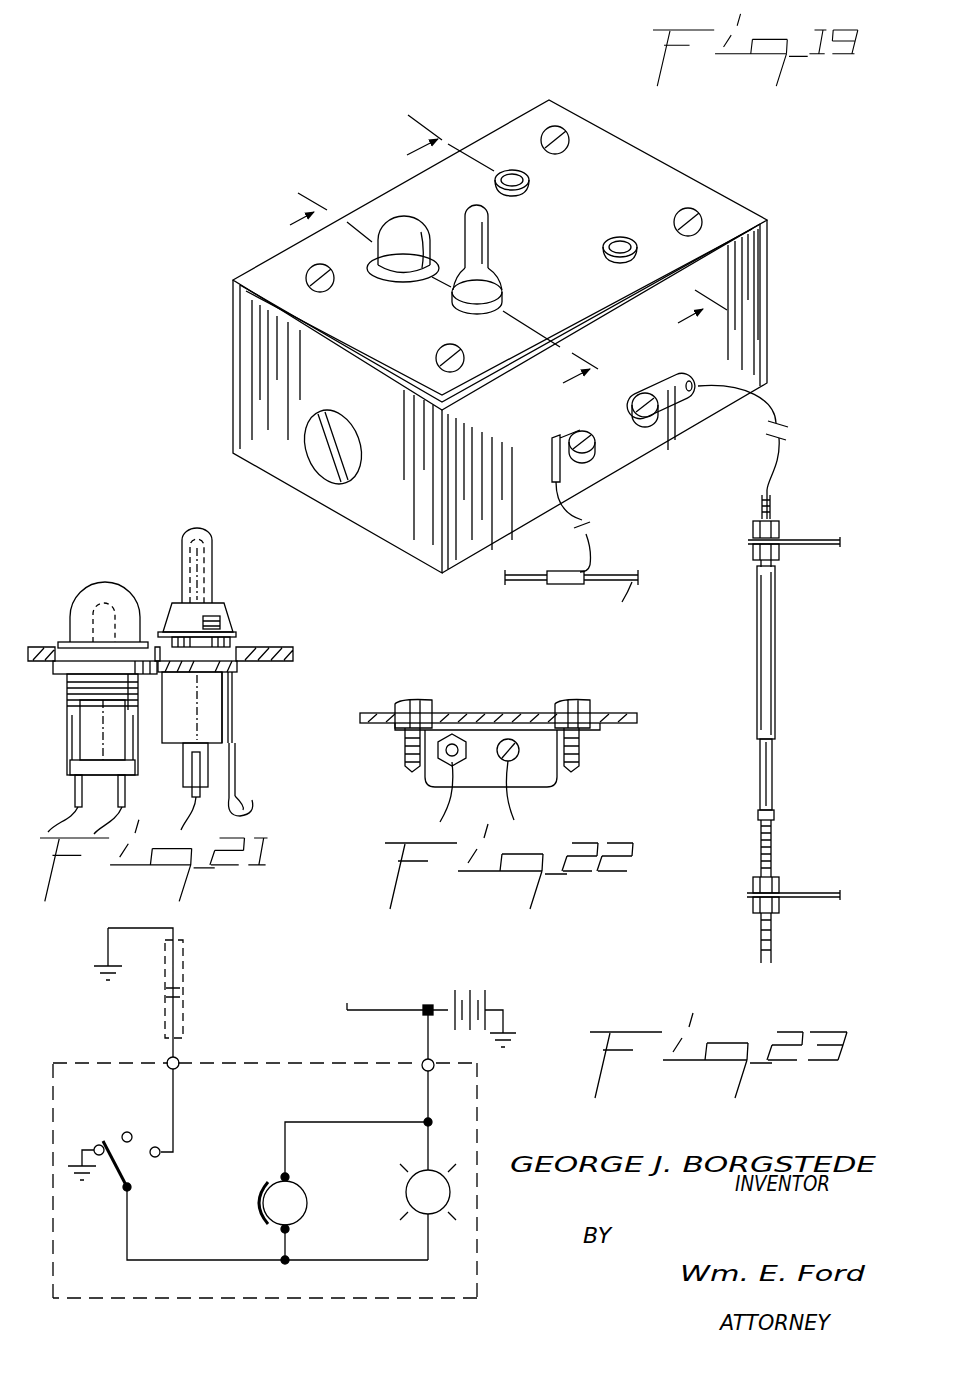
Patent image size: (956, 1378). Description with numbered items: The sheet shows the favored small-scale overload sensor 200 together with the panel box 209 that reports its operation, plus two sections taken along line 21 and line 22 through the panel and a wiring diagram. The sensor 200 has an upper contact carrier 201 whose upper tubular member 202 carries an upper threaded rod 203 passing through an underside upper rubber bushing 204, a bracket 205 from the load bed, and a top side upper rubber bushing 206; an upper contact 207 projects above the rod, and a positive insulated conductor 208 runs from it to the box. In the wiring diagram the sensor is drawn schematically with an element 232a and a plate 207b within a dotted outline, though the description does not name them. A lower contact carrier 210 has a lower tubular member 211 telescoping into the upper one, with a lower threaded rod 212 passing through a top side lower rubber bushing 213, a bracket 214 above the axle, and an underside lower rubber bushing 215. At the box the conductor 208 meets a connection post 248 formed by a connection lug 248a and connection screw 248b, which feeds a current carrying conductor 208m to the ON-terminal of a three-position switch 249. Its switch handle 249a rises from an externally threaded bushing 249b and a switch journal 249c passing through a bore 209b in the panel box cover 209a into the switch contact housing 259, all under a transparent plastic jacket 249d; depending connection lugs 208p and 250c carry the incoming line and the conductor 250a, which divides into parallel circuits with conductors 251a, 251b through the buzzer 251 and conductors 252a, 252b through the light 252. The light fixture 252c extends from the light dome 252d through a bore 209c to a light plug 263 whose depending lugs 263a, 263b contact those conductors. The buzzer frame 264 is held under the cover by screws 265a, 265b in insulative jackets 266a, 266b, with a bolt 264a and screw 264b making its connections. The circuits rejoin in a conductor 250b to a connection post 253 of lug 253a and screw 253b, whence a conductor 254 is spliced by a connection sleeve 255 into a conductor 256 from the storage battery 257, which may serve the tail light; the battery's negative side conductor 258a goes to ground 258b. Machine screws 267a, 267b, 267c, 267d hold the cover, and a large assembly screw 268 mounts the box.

In FIG. 19, the panel box 209 is at (776, 319).
In FIG. 19, the panel box cover 209a is at (651, 156).
In FIG. 22, the panel box cover 209a is at (511, 712).
In FIG. 21, the bore 209b is at (256, 665).
In FIG. 21, the bore 209c is at (40, 663).
In FIG. 19, the large assembly screw 268 is at (326, 410).
In FIG. 19, the machine screw 267a is at (560, 126).
In FIG. 19, the machine screw 267b is at (700, 216).
In FIG. 19, the machine screw 267c is at (306, 276).
In FIG. 19, the machine screw 267d is at (447, 344).
In FIG. 19, the screw 265a is at (513, 170).
In FIG. 22, the screw 265a is at (421, 700).
In FIG. 19, the screw 265b is at (606, 244).
In FIG. 22, the screw 265b is at (572, 704).
In FIG. 22, the insulative jacket 266a is at (404, 705).
In FIG. 22, the insulative jacket 266b is at (586, 716).
In FIG. 19, the light 252 is at (428, 237).
In FIG. 21, the light 252 is at (97, 576).
In FIG. 23, the light 252 is at (416, 1190).
In FIG. 21, the conductor 252a is at (72, 812).
In FIG. 23, the conductor 252a is at (410, 1259).
In FIG. 21, the conductor 252b is at (110, 816).
In FIG. 23, the conductor 252b is at (427, 1159).
In FIG. 21, the light fixture 252c is at (60, 640).
In FIG. 21, the light dome 252d is at (150, 560).
In FIG. 19, the three-position switch 249 is at (481, 256).
In FIG. 21, the three-position switch 249 is at (241, 586).
In FIG. 23, the three-position switch 249 is at (110, 1174).
In FIG. 21, the switch handle 249a is at (192, 546).
In FIG. 21, the externally threaded bushing 249b is at (226, 618).
In FIG. 21, the switch journal 249c is at (221, 630).
In FIG. 21, the transparent plastic jacket 249d is at (214, 546).
In FIG. 19, the line 22— 22 is at (544, 229).
In FIG. 19, the line 21— 21 is at (427, 298).
In FIG. 19, the connection post 248 is at (692, 380).
In FIG. 23, the connection post 248 is at (168, 1060).
In FIG. 19, the connection lug 248a is at (664, 408).
In FIG. 19, the connection screw 248b is at (630, 404).
In FIG. 19, the connection post 253 is at (550, 463).
In FIG. 23, the connection post 253 is at (428, 1060).
In FIG. 19, the connection lug 253a is at (596, 451).
In FIG. 19, the connection screw 253b is at (582, 433).
In FIG. 19, the conductor 254 is at (591, 565).
In FIG. 23, the conductor 254 is at (428, 1041).
In FIG. 19, the connection sleeve 255 is at (552, 589).
In FIG. 23, the connection sleeve 255 is at (426, 1008).
In FIG. 19, the conductor 256 is at (553, 571).
In FIG. 23, the conductor 256 is at (360, 1006).
In FIG. 19, the positive insulated conductor 208 is at (783, 453).
In FIG. 23, the positive insulated conductor 208 is at (179, 1052).
In FIG. 19, the upper contact 207 is at (776, 496).
In FIG. 19, the upper threaded rod 203 is at (773, 515).
In FIG. 19, the top side upper rubber bushing 206 is at (752, 531).
In FIG. 19, the bracket 205 is at (866, 520).
In FIG. 23, the bracket 205 is at (100, 968).
In FIG. 19, the underside upper rubber bushing 204 is at (755, 553).
In FIG. 19, the upper contact carrier 201 is at (778, 644).
In FIG. 19, the upper tubular member 202 is at (757, 651).
In FIG. 19, the overload sensor 200 is at (778, 719).
In FIG. 23, the overload sensor 200 is at (190, 953).
In FIG. 19, the lower contact carrier 210 is at (774, 791).
In FIG. 19, the lower tubular member 211 is at (759, 791).
In FIG. 19, the lower threaded rod 212 is at (759, 856).
In FIG. 19, the top side lower rubber bushing 213 is at (780, 880).
In FIG. 19, the bracket 214 is at (862, 886).
In FIG. 19, the underside lower rubber bushing 215 is at (779, 900).
In FIG. 21, the light plug 263 is at (94, 726).
In FIG. 21, the depending lug 263a is at (77, 796).
In FIG. 21, the depending lug 263b is at (118, 797).
In FIG. 21, the switch contact housing 259 is at (237, 720).
In FIG. 21, the connection lug 250c is at (190, 771).
In FIG. 21, the conductor 250a is at (190, 812).
In FIG. 23, the conductor 250a is at (127, 1230).
In FIG. 23, the conductor 250b is at (427, 1121).
In FIG. 21, the connection lug 208p is at (236, 771).
In FIG. 21, the current carrying conductor 208m is at (246, 808).
In FIG. 23, the current carrying conductor 208m is at (174, 1131).
In FIG. 22, the buzzer 251 is at (566, 776).
In FIG. 23, the buzzer 251 is at (288, 1203).
In FIG. 22, the conductor 251a is at (438, 806).
In FIG. 23, the conductor 251a is at (283, 1255).
In FIG. 22, the conductor 251b is at (516, 806).
In FIG. 23, the conductor 251b is at (284, 1161).
In FIG. 22, the frame 264 is at (490, 791).
In FIG. 22, the bolt 264a is at (446, 762).
In FIG. 22, the screw 264b is at (521, 762).
In FIG. 23, the capacitor element 232a is at (180, 986).
In FIG. 23, the capacitor plate 207b is at (186, 1003).
In FIG. 23, the storage battery 257 is at (500, 996).
In FIG. 23, the negative side conductor 258a is at (505, 1026).
In FIG. 23, the ground 258b is at (503, 1046).
In FIG. 19, the tail light conductor label tail is at (614, 608).